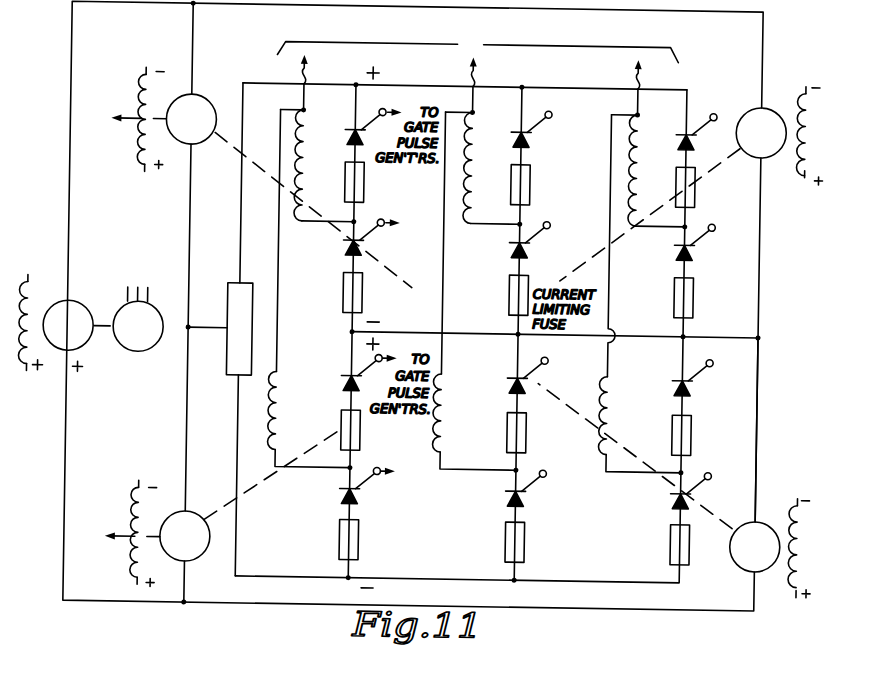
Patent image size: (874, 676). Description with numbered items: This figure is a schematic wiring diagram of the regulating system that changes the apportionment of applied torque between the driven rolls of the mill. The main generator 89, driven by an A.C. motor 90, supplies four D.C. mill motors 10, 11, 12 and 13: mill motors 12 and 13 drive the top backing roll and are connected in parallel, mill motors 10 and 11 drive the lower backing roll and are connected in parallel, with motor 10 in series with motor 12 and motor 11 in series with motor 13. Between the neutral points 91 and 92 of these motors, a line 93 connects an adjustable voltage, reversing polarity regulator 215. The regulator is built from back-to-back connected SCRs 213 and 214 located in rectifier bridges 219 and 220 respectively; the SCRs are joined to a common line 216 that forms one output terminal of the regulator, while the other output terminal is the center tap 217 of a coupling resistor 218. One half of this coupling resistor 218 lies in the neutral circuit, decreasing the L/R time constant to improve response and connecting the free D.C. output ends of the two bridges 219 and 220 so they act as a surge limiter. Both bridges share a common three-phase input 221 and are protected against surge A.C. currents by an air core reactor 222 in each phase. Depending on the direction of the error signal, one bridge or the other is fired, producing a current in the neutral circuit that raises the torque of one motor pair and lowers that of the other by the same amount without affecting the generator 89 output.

The mill motor 10 is at (208, 576).
The mill motor 11 is at (751, 106).
The mill motor 12 is at (206, 104).
The mill motor 13 is at (750, 518).
The main generator 89 is at (84, 312).
The A.C. motor 90 is at (151, 350).
The neutral point 91 is at (186, 330).
The neutral point 92 is at (758, 333).
The line 93 is at (200, 332).
The SCR 213 is at (380, 239).
The SCR 214 is at (362, 367).
The adjustable voltage, reversing polarity regulator 215 is at (557, 82).
The common line 216 is at (418, 332).
The center tap 217 is at (226, 323).
The coupling resistor 218 is at (228, 378).
The rectifier bridge 219 is at (544, 211).
The rectifier bridge 220 is at (490, 462).
The 3-phase input 221 is at (465, 64).
The air core reactor 222 is at (302, 148).